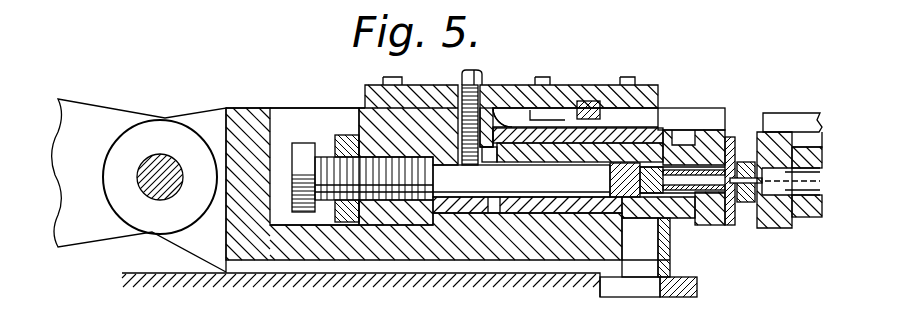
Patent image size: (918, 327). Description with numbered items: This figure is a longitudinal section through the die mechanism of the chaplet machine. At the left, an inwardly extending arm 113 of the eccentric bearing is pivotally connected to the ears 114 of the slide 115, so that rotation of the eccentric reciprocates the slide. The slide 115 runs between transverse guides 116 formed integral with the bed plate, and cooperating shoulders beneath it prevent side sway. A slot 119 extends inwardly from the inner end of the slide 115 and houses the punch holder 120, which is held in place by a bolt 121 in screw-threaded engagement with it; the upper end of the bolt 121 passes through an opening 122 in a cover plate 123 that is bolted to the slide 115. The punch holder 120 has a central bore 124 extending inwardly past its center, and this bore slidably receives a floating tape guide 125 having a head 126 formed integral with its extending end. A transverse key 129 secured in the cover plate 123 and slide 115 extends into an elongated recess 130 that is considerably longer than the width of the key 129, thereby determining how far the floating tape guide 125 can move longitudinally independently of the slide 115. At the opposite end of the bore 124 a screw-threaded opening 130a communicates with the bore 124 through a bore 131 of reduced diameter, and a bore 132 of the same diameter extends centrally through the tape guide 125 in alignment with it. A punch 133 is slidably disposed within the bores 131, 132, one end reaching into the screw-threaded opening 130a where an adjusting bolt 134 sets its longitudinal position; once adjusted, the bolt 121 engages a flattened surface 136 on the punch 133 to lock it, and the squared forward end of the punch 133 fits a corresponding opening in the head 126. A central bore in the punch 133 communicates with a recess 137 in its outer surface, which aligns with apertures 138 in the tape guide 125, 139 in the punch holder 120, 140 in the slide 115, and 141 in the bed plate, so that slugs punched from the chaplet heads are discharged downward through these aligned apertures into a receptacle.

The inwardly extending arm 113 is at (139, 185).
The ears 114 is at (202, 123).
The slide 115 is at (245, 118).
The transverse guides 116 is at (306, 104).
The slot 119 is at (312, 122).
The punch holder 120 is at (422, 120).
The bolt 121 is at (470, 80).
The opening 122 is at (483, 125).
The cover plate 123 is at (563, 88).
The central bore 124 is at (494, 205).
The floating tape guide 125 is at (645, 143).
The head 126 is at (716, 224).
The transverse key 129 is at (596, 101).
The elongated recess 130 is at (608, 117).
The screw-threaded opening 130a is at (393, 203).
The bore of reduced diameter 131 is at (447, 200).
The bore 132 is at (585, 198).
The punch 133 is at (555, 175).
The adjusting bolt 134 is at (323, 157).
The flattened surface 136 is at (498, 123).
The recess 137 is at (643, 185).
The aperture 138 is at (676, 219).
The aperture 139 is at (648, 222).
The aperture 140 is at (650, 265).
The aperture 141 is at (655, 290).